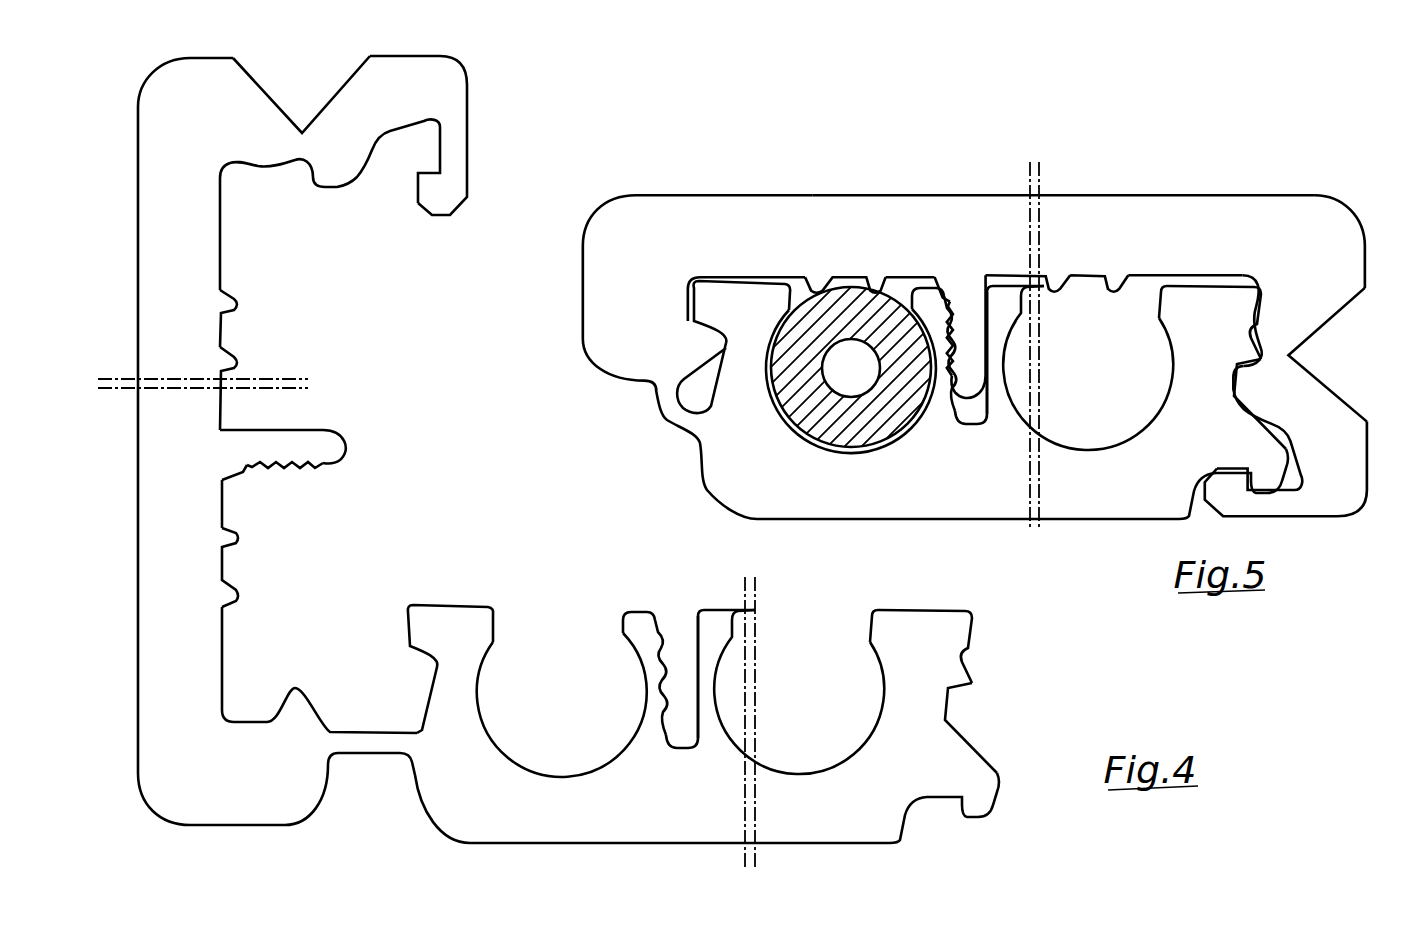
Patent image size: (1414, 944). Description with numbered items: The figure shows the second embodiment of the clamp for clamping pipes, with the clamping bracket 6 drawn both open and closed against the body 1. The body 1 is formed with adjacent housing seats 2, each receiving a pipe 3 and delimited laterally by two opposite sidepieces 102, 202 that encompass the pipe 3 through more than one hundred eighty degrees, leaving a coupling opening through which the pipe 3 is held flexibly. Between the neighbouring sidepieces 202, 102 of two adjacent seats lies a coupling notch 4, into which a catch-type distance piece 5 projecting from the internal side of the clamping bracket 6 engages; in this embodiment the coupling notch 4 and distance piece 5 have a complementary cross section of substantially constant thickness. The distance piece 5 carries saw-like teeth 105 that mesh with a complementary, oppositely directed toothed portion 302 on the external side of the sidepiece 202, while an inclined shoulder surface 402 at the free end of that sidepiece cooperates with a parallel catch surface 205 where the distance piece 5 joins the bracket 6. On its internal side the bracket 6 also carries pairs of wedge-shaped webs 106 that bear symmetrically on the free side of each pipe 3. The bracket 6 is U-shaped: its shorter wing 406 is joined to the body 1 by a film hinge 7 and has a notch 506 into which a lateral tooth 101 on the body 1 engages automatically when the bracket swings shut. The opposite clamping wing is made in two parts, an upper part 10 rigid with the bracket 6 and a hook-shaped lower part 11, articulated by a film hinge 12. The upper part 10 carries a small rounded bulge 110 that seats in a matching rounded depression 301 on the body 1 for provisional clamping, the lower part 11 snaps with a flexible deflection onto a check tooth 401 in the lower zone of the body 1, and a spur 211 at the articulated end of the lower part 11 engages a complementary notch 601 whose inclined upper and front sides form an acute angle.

In FIG. 4, the body 1 is at (833, 830).
In FIG. 5, the body 1 is at (1011, 505).
In FIG. 4, the housing seat 2 is at (682, 718).
In FIG. 5, the housing seat 2 is at (964, 350).
In FIG. 5, the pipe 3 is at (782, 405).
In FIG. 4, the coupling notch 4 is at (680, 743).
In FIG. 5, the coupling notch 4 is at (971, 423).
In FIG. 4, the catch-type distance piece 5 is at (323, 433).
In FIG. 5, the catch-type distance piece 5 is at (985, 402).
In FIG. 4, the clamping bracket 6 is at (148, 548).
In FIG. 5, the clamping bracket 6 is at (1103, 203).
In FIG. 4, the film hinge 7 is at (368, 745).
In FIG. 5, the film hinge 7 is at (675, 415).
In FIG. 4, the upper part 10 is at (233, 82).
In FIG. 5, the upper part 10 is at (1345, 247).
In FIG. 4, the lower part 11 is at (397, 68).
In FIG. 5, the lower part 11 is at (1350, 432).
In FIG. 4, the film hinge 12 is at (302, 138).
In FIG. 5, the film hinge 12 is at (1286, 363).
In FIG. 4, the lateral tooth 101 is at (412, 615).
In FIG. 5, the lateral tooth 101 is at (727, 298).
In FIG. 4, the sidepiece 102 is at (478, 652).
In FIG. 5, the sidepiece 102 is at (755, 325).
In FIG. 4, the teeth 105 is at (310, 470).
In FIG. 5, the teeth 105 is at (965, 312).
In FIG. 4, the webs 106 is at (238, 290).
In FIG. 5, the webs 106 is at (832, 270).
In FIG. 4, the provisional clamping projection 110 is at (267, 160).
In FIG. 5, the provisional clamping projection 110 is at (1253, 323).
In FIG. 4, the sidepiece 202 is at (635, 642).
In FIG. 5, the sidepiece 202 is at (927, 298).
In FIG. 4, the catch surface 205 is at (246, 486).
In FIG. 4, the spur 211 is at (330, 180).
In FIG. 5, the spur 211 is at (1240, 375).
In FIG. 4, the notch 301 is at (983, 656).
In FIG. 5, the notch 301 is at (1263, 328).
In FIG. 4, the toothed portion 302 is at (672, 642).
In FIG. 5, the toothed portion 302 is at (935, 405).
In FIG. 4, the check tooth 401 is at (986, 799).
In FIG. 5, the check tooth 401 is at (1263, 477).
In FIG. 4, the inclined shoulder surface 402 is at (657, 612).
In FIG. 5, the inclined shoulder surface 402 is at (934, 349).
In FIG. 4, the wing 406 is at (292, 803).
In FIG. 5, the wing 406 is at (635, 343).
In FIG. 4, the notch 506 is at (245, 710).
In FIG. 5, the notch 506 is at (702, 295).
In FIG. 4, the notch 601 is at (962, 709).
In FIG. 5, the notch 601 is at (1232, 382).